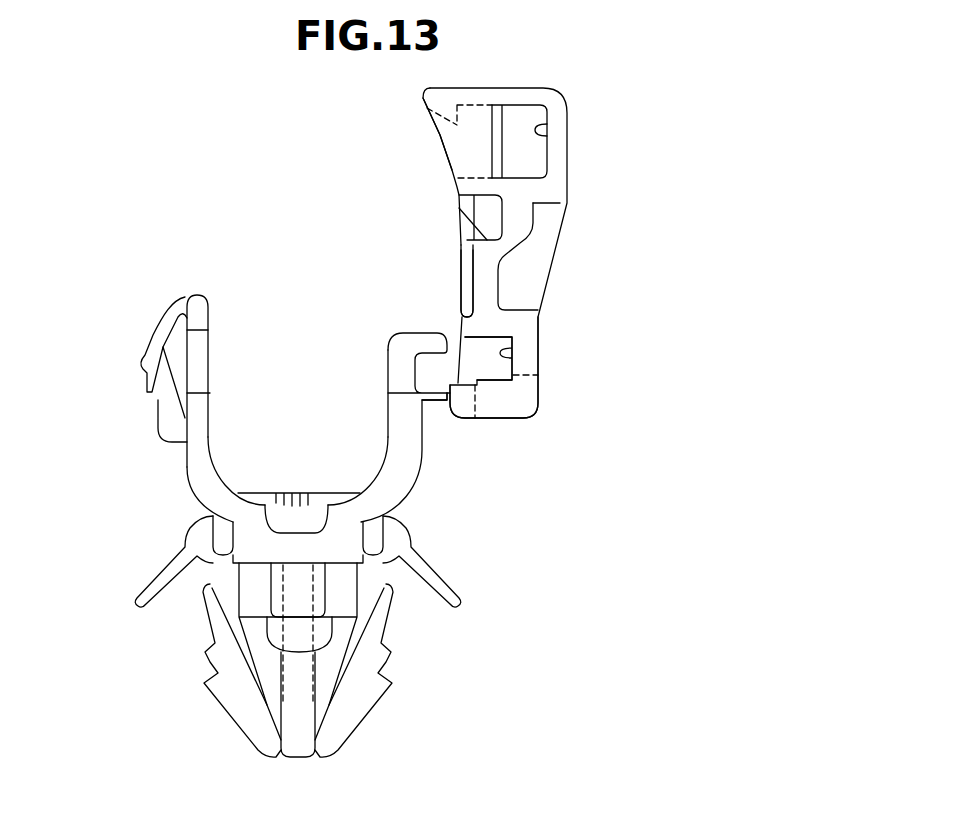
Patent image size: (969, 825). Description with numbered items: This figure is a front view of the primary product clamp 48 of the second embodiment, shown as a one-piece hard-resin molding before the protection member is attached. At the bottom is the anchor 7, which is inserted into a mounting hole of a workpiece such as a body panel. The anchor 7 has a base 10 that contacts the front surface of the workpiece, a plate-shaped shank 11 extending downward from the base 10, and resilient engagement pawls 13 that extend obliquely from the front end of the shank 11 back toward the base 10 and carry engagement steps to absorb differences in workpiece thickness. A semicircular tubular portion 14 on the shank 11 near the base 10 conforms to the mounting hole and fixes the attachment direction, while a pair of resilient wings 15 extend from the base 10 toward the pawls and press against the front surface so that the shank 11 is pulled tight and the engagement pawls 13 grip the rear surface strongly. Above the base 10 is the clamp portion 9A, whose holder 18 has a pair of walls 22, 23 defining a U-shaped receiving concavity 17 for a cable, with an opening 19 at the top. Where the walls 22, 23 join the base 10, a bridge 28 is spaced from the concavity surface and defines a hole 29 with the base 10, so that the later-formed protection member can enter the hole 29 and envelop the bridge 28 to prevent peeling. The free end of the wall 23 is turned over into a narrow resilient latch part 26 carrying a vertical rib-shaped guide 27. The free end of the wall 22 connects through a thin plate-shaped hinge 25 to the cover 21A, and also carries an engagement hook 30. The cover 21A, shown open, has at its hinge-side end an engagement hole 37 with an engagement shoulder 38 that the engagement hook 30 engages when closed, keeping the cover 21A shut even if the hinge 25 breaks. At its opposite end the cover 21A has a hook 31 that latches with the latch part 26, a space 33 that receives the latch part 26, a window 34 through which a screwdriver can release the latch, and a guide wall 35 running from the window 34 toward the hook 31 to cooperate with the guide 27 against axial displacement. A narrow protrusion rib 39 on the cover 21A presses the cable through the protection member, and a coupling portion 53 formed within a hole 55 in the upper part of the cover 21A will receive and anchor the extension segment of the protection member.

The primary product clamp 48 is at (671, 166).
The cover 21A is at (558, 244).
The hook 31 is at (445, 128).
The space 33 is at (515, 148).
The window 34 is at (541, 127).
The guide wall 35 is at (472, 145).
The coupling portion 53 is at (458, 208).
The hole 55 is at (493, 215).
The protrusion rib 39 is at (460, 276).
The engagement hole 37 is at (504, 351).
The engagement shoulder 38 is at (477, 397).
The clamp portion 9A is at (568, 388).
The opening 19 is at (259, 326).
The receiving concavity 17 is at (280, 417).
The wall 23 is at (205, 480).
The latch part 26 is at (145, 358).
The guide 27 is at (172, 418).
The wall 22 is at (398, 453).
The holder 18 is at (406, 489).
The engagement hook 30 is at (430, 342).
The hinge 25 is at (436, 404).
The bridge 28 is at (270, 493).
The hole 29 is at (300, 520).
The anchor 7 is at (418, 638).
The resilient wings 15 is at (170, 583).
The base 10 is at (240, 598).
The semicircular tubular portion 14 is at (320, 630).
The shank 11 is at (295, 722).
The engagement pawls 13 is at (220, 663).